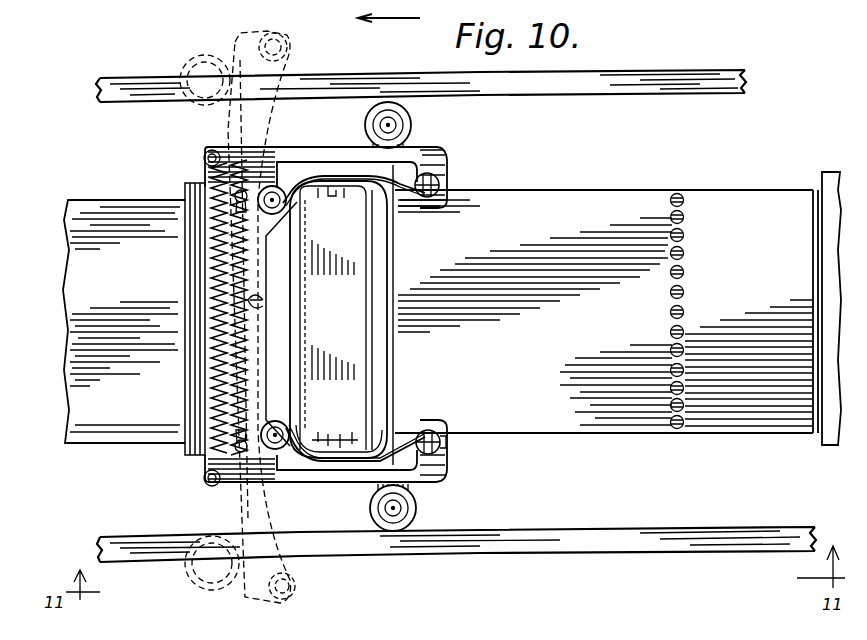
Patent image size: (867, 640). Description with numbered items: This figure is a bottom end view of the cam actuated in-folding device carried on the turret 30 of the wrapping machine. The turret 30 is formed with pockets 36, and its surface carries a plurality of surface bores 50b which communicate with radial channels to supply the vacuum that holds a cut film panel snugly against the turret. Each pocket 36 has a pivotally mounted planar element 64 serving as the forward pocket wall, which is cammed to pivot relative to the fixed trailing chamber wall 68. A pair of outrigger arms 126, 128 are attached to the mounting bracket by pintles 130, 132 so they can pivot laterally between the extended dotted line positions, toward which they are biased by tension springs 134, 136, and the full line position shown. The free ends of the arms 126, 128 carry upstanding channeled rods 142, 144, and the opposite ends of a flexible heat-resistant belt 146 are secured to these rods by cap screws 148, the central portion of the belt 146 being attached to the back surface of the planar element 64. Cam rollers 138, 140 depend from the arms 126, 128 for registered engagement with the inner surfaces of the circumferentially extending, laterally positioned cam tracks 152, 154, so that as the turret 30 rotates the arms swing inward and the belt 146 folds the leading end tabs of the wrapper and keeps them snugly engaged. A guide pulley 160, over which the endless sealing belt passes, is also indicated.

The turret 30 is at (629, 186).
The pocket 36 is at (185, 405).
The surface bores 50b is at (670, 350).
The planar element 64 is at (290, 265).
The trailing chamber wall 68 is at (400, 298).
The outrigger arm 126 is at (342, 482).
The outrigger arm 128 is at (313, 156).
The pintle 130 is at (290, 424).
The pintle 132 is at (290, 204).
The tension spring 134 is at (210, 165).
The tension spring 136 is at (212, 440).
The cam roller 138 is at (418, 506).
The cam roller 140 is at (412, 127).
The channeled rod 142 is at (440, 433).
The channeled rod 144 is at (432, 180).
The flexible belt 146 is at (398, 422).
The cap screws 148 is at (446, 444).
The cam track 152 is at (458, 556).
The cam track 154 is at (604, 89).
The guide pulley 160 is at (262, 298).